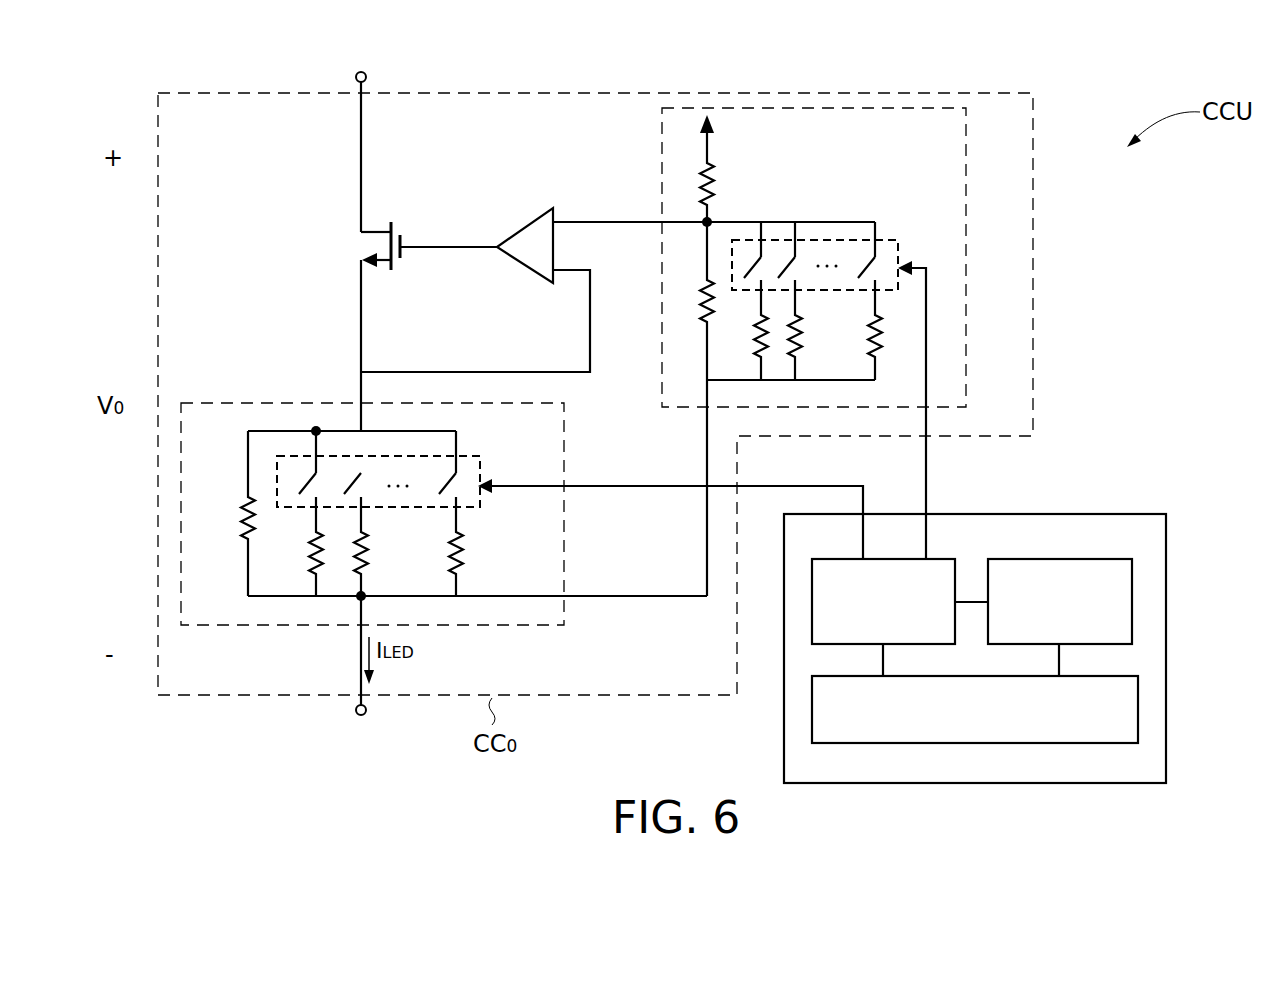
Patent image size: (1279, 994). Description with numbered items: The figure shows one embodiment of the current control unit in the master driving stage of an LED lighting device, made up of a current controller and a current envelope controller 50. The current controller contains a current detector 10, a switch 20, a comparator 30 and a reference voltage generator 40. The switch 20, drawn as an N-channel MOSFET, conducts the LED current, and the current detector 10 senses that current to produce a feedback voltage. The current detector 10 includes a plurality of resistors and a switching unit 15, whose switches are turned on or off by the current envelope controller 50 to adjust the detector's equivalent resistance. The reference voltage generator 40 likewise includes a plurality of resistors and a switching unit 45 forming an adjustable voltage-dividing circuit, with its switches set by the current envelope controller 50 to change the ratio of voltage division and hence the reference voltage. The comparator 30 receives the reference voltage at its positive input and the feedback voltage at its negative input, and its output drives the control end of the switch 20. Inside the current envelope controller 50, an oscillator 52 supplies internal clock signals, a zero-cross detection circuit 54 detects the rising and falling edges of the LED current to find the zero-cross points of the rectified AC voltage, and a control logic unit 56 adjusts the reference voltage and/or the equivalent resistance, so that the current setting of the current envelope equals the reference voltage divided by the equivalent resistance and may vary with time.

The current detector 10 is at (444, 514).
The switching unit 15 is at (475, 455).
The switch 20 is at (398, 223).
The comparator 30 is at (530, 223).
The reference voltage generator 40 is at (847, 352).
The switching unit 45 is at (895, 237).
The current envelope controller 50 is at (975, 618).
The oscillator 52 is at (1080, 558).
The zero-cross detection circuit 54 is at (977, 745).
The control logic unit 56 is at (938, 558).